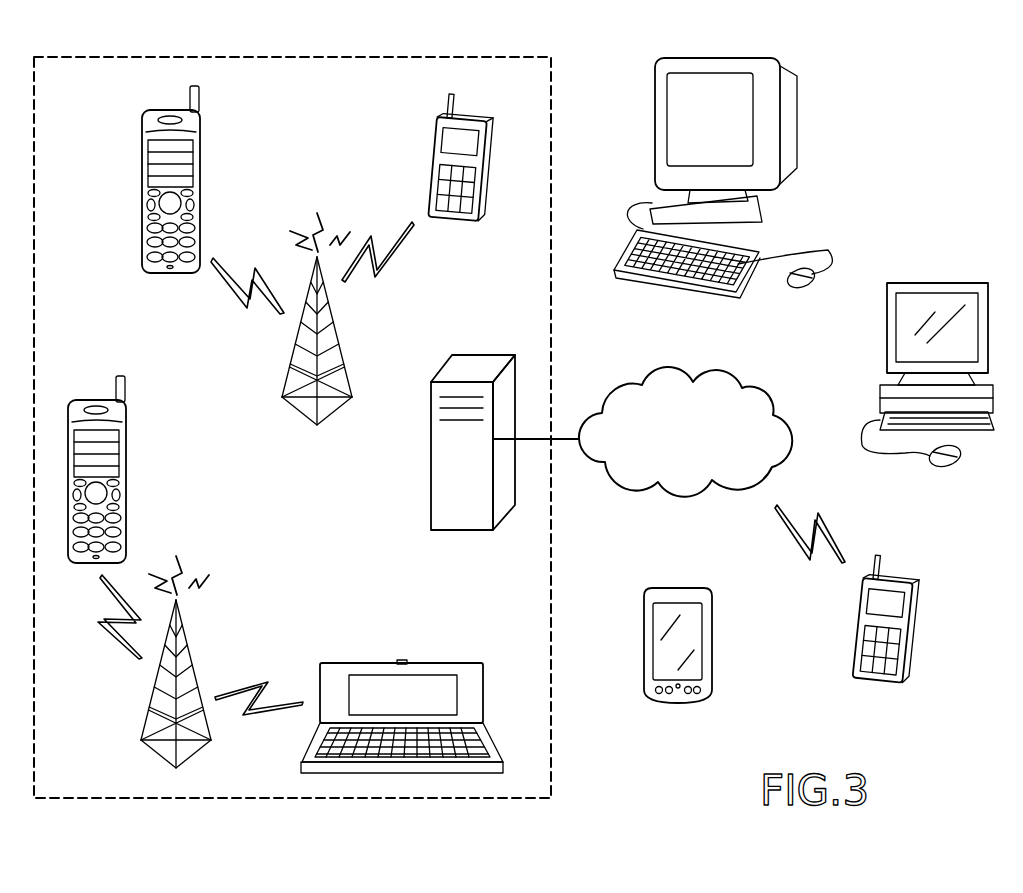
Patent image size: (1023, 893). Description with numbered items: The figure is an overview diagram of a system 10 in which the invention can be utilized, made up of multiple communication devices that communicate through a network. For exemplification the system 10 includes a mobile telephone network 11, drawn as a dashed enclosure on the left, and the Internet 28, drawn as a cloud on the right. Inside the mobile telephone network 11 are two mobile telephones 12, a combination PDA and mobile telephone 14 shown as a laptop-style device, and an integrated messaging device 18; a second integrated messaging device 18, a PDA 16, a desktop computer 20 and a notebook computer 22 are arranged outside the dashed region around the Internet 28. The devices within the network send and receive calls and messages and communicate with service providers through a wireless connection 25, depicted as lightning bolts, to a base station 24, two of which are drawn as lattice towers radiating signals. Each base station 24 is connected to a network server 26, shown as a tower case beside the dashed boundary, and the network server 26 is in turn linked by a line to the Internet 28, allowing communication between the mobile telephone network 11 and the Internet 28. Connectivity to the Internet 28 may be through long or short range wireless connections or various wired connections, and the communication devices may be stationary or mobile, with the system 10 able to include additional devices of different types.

The system 10 is at (981, 537).
The mobile telephone network 11 is at (73, 98).
The mobile telephone 12 is at (200, 192).
The combination PDA and mobile telephone 14 is at (402, 661).
The PDA 16 is at (714, 643).
The integrated messaging device (IMD) 18 is at (432, 170).
The desktop computer 20 is at (797, 108).
The notebook computer 22 is at (937, 283).
The base station 24 is at (335, 322).
The wireless connection 25 is at (122, 640).
The network server 26 is at (431, 455).
The Internet 28 is at (722, 375).